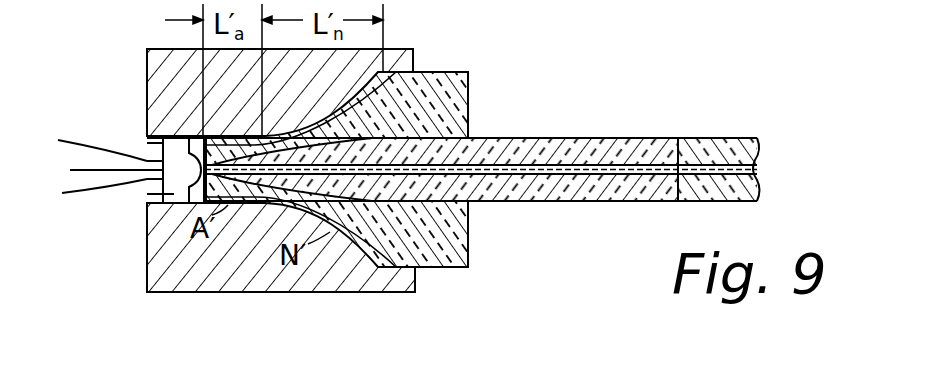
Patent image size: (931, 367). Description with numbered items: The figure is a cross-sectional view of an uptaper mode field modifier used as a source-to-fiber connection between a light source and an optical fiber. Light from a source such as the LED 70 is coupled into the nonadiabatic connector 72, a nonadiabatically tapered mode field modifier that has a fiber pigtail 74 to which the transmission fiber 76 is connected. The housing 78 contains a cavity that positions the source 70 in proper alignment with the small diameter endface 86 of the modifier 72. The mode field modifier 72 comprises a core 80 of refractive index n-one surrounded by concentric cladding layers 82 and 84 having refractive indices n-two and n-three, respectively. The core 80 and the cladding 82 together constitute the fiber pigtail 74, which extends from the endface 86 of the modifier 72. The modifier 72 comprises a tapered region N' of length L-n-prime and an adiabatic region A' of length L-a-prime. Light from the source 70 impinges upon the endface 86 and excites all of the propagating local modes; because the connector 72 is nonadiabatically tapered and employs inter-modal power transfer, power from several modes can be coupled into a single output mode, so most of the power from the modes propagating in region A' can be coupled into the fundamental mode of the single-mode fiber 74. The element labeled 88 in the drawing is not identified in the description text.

The LED 70 is at (147, 194).
The nonadiabatic connector 72 is at (449, 268).
The fiber pigtail 74 is at (588, 137).
The transmission fiber 76 is at (733, 136).
The housing 78 is at (230, 292).
The core 80 is at (567, 176).
The cladding layer 82 is at (647, 192).
The cladding layer 84 is at (452, 77).
The small diameter endface 86 is at (147, 143).
The outer jacket material 88 is at (469, 98).